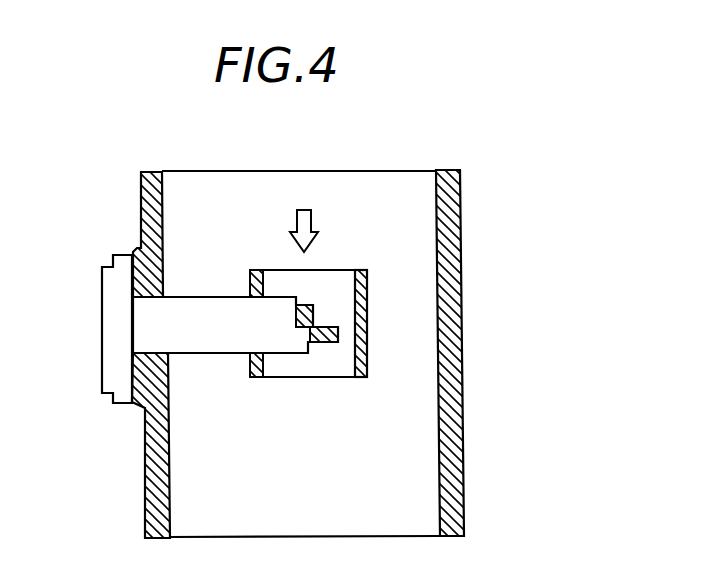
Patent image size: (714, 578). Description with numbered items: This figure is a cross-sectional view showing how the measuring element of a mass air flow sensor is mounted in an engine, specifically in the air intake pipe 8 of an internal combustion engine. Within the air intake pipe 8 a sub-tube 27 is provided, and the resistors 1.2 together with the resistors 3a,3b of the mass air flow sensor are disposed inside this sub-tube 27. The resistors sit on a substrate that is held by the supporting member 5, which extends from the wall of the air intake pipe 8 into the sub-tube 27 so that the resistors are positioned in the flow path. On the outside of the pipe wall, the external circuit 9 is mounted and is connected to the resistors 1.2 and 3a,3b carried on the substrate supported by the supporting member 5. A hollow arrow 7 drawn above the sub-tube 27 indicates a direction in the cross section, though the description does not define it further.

The air intake pipe 8 is at (460, 228).
The external circuit 9 is at (110, 334).
The supporting member 5 is at (150, 317).
The resistors 3a,3b is at (300, 304).
The resistors 1.2 is at (340, 330).
The sub-tube 27 is at (368, 290).
The direction of movement 7 is at (311, 208).